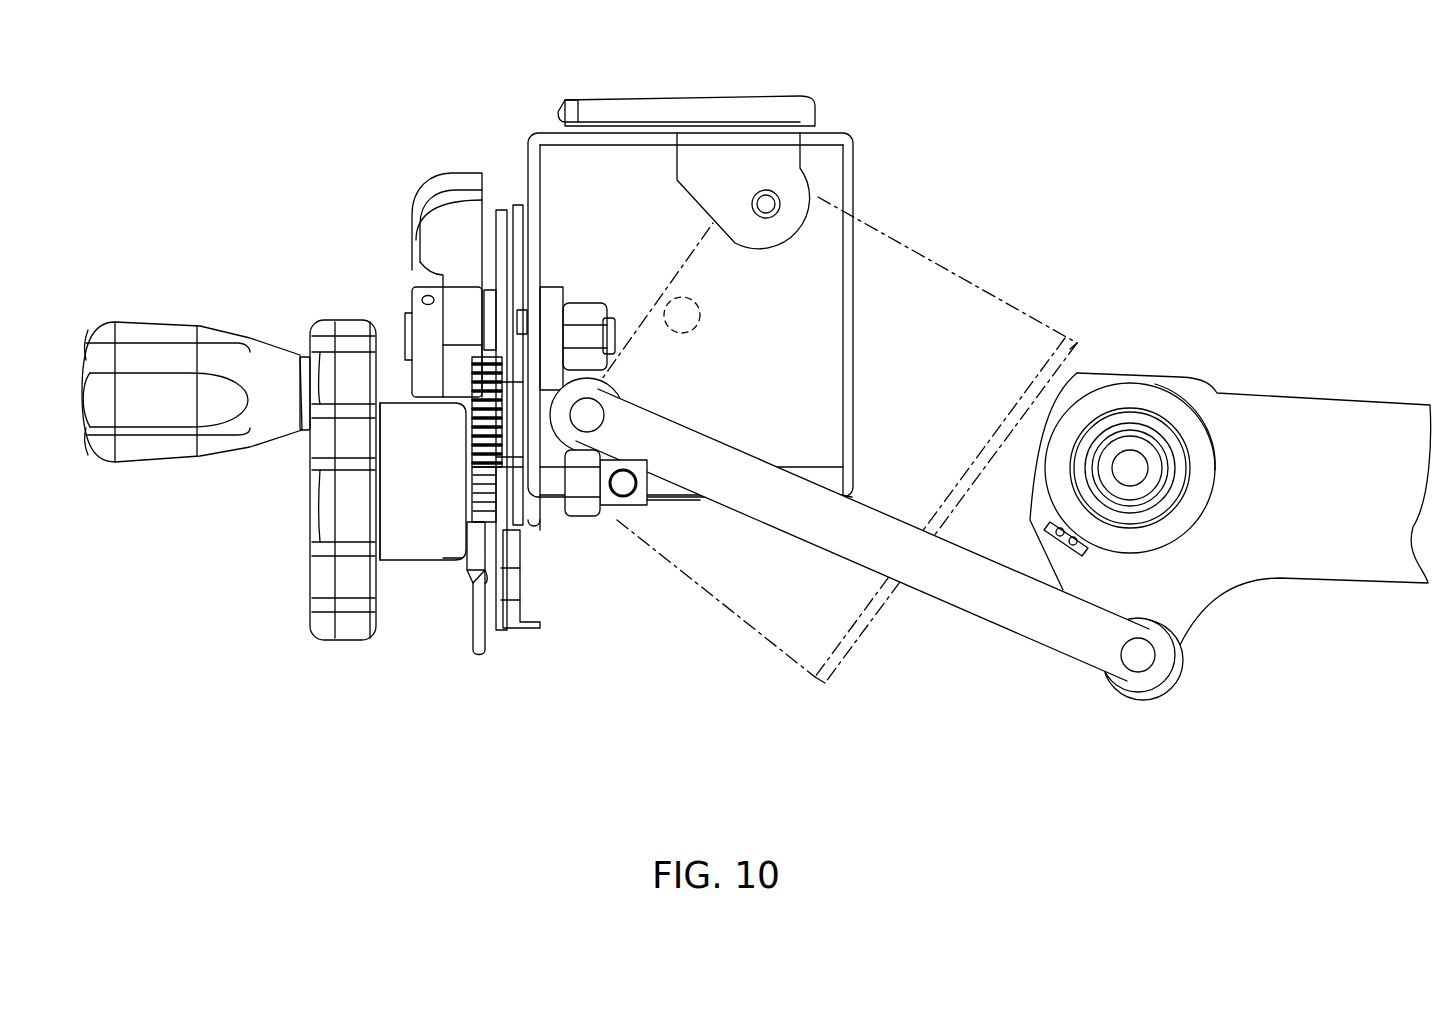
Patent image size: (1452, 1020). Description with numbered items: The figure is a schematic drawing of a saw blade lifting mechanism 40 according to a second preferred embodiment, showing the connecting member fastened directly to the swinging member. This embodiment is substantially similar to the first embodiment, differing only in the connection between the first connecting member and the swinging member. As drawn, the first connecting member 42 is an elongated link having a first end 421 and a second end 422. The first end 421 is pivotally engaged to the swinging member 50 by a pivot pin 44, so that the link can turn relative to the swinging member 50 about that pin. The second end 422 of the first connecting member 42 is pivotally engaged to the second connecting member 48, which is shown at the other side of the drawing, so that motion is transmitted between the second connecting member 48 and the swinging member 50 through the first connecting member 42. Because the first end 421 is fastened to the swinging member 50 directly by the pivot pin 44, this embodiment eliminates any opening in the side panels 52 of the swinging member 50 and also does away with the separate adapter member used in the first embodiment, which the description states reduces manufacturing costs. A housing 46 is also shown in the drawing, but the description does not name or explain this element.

The saw blade lifting mechanism 40 is at (1034, 146).
The first connecting member 42 is at (904, 564).
The first end 421 is at (562, 403).
The second end 422 is at (1155, 678).
The pivot pin 44 is at (587, 420).
The housing 46 is at (553, 132).
The second connecting member 48 is at (1287, 440).
The swinging member 50 is at (777, 648).
The side panels 52 is at (735, 590).